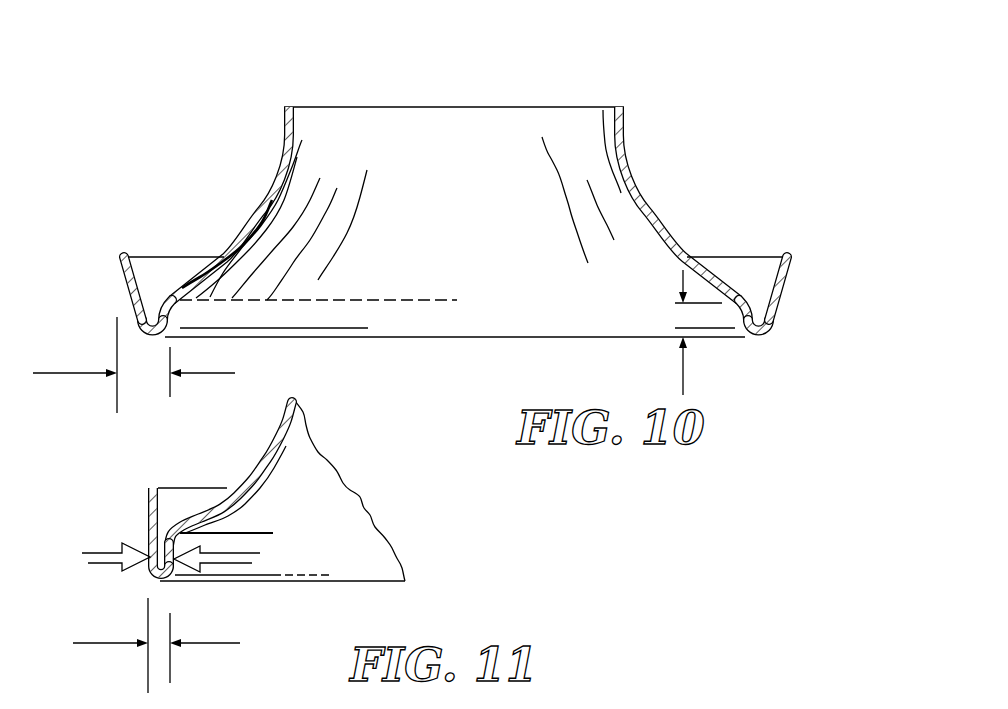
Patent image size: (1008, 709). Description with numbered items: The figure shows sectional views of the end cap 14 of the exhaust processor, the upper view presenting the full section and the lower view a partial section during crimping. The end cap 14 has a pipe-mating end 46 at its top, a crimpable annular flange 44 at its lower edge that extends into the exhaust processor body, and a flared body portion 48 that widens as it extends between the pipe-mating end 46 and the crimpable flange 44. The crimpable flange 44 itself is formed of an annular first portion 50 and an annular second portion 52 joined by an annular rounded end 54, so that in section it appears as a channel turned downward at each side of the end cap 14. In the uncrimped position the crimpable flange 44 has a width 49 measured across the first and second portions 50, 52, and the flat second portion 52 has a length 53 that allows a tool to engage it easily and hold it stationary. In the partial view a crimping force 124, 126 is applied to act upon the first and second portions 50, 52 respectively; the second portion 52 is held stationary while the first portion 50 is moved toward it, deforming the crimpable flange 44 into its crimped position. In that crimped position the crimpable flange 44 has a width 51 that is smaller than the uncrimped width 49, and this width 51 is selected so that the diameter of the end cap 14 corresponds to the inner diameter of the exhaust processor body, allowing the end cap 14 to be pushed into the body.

In FIG. 10, the end cap 14 is at (561, 95).
In FIG. 11, the end cap 14 is at (372, 503).
In FIG. 10, the pipe-mating end 46 is at (622, 110).
In FIG. 10, the flared body portion 48 is at (296, 165).
In FIG. 11, the flared body portion 48 is at (240, 474).
In FIG. 10, the first portion 50 is at (120, 272).
In FIG. 11, the first portion 50 is at (148, 517).
In FIG. 10, the second portion 52 is at (170, 310).
In FIG. 11, the second portion 52 is at (180, 533).
In FIG. 10, the annular rounded end 54 is at (150, 335).
In FIG. 11, the annular rounded end 54 is at (158, 586).
In FIG. 10, the crimpable annular flange 44 is at (440, 313).
In FIG. 10, the width 49 is at (150, 365).
In FIG. 10, the length 53 is at (703, 339).
In FIG. 11, the width 51 is at (145, 645).
In FIG. 11, the crimping force 124 is at (104, 560).
In FIG. 11, the crimping force 126 is at (238, 563).